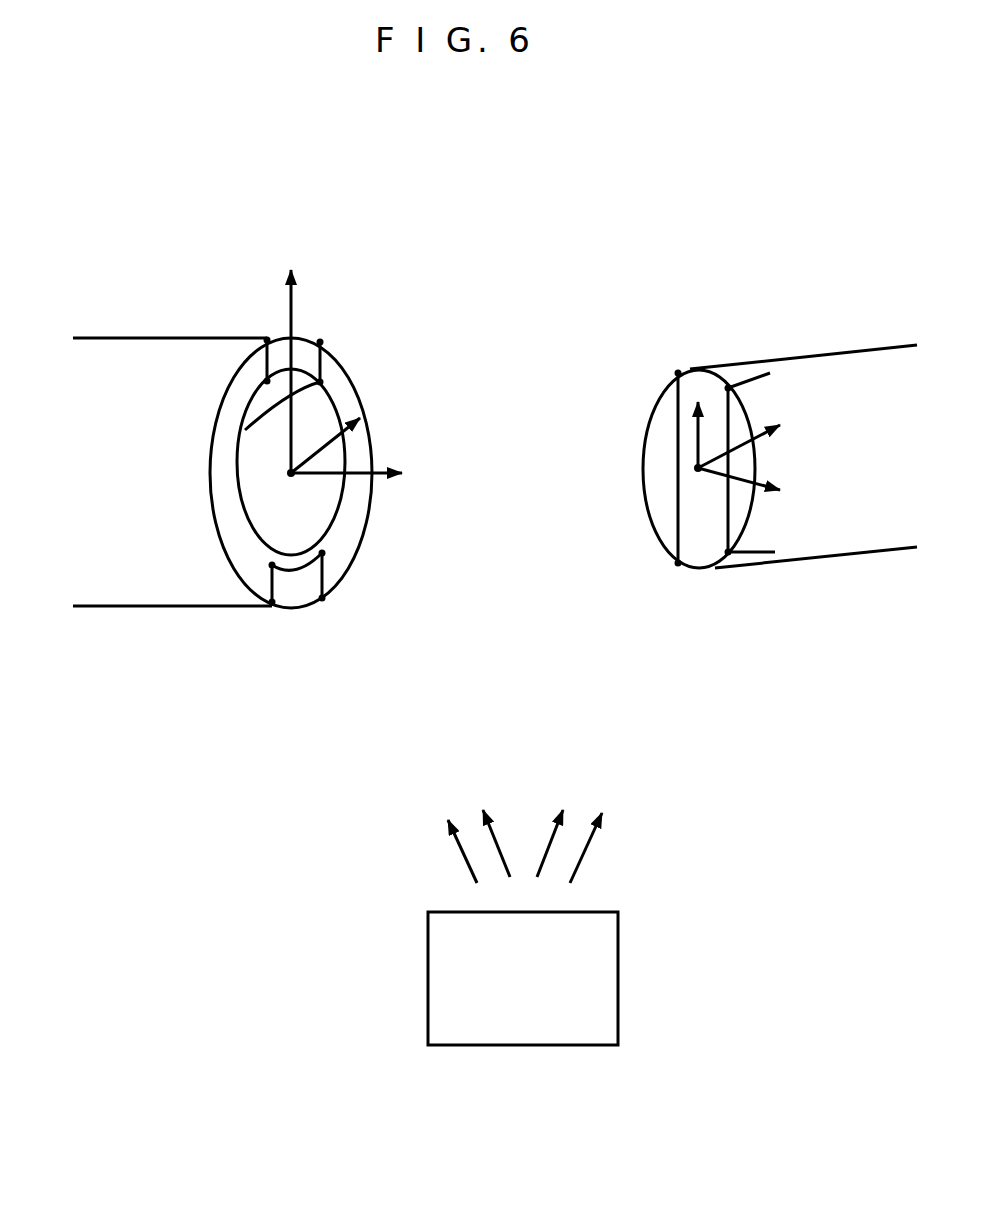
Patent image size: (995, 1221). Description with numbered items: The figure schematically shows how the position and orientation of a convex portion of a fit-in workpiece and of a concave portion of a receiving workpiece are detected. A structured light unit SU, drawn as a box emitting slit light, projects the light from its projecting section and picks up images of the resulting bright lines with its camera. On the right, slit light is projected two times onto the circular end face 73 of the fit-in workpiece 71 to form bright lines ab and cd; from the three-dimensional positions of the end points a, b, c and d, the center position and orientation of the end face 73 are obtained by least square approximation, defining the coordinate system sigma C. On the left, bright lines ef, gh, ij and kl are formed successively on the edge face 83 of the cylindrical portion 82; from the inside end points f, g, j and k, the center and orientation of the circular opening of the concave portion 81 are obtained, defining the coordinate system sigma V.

The cylindrical member 71 is at (853, 518).
The end face 73 is at (698, 550).
The concave portion 81 is at (305, 500).
The cylindrical portion 82 is at (130, 350).
The edge face 83 is at (337, 377).
The structured light unit SU is at (517, 1047).